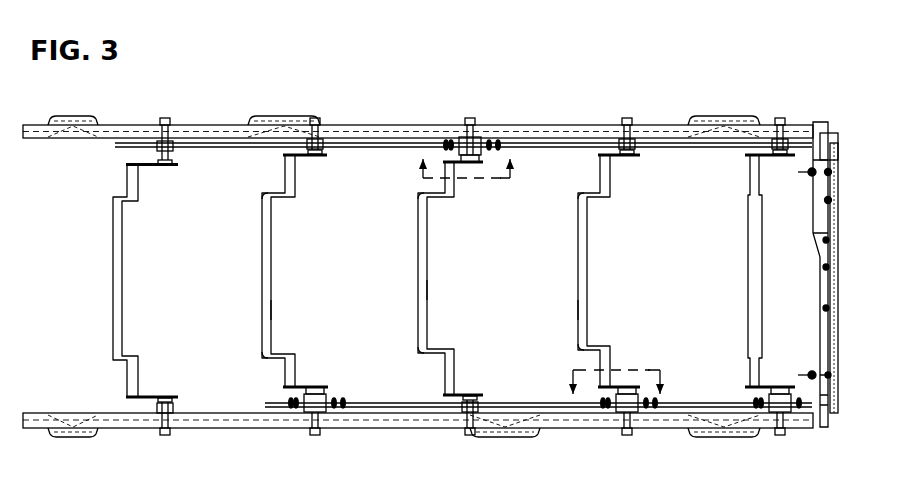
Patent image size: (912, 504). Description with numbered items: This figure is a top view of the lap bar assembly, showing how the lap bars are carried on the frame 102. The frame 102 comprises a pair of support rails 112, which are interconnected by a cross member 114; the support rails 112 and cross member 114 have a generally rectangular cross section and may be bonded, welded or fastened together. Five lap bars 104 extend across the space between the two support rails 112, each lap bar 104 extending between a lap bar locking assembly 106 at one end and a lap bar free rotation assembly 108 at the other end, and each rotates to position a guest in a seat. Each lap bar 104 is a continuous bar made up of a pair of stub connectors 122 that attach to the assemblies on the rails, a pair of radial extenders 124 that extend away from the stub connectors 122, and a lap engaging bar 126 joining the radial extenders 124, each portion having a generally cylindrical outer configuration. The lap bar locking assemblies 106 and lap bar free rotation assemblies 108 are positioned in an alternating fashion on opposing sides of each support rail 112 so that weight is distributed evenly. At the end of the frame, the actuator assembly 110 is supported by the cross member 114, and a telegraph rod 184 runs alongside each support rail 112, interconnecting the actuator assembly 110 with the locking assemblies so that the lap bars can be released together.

The frame 102 is at (607, 433).
The lap bar 104 is at (125, 282).
The lap bar locking assembly 106 is at (163, 176).
The lap bar free rotation assembly 108 is at (311, 171).
The actuator assembly 110 is at (841, 137).
The support rail 112 is at (613, 125).
The cross member 114 is at (838, 198).
The stub connector 122 is at (601, 170).
The radial extender 124 is at (280, 200).
The lap engaging bar 126 is at (272, 310).
The telegraph rod 184 is at (698, 148).